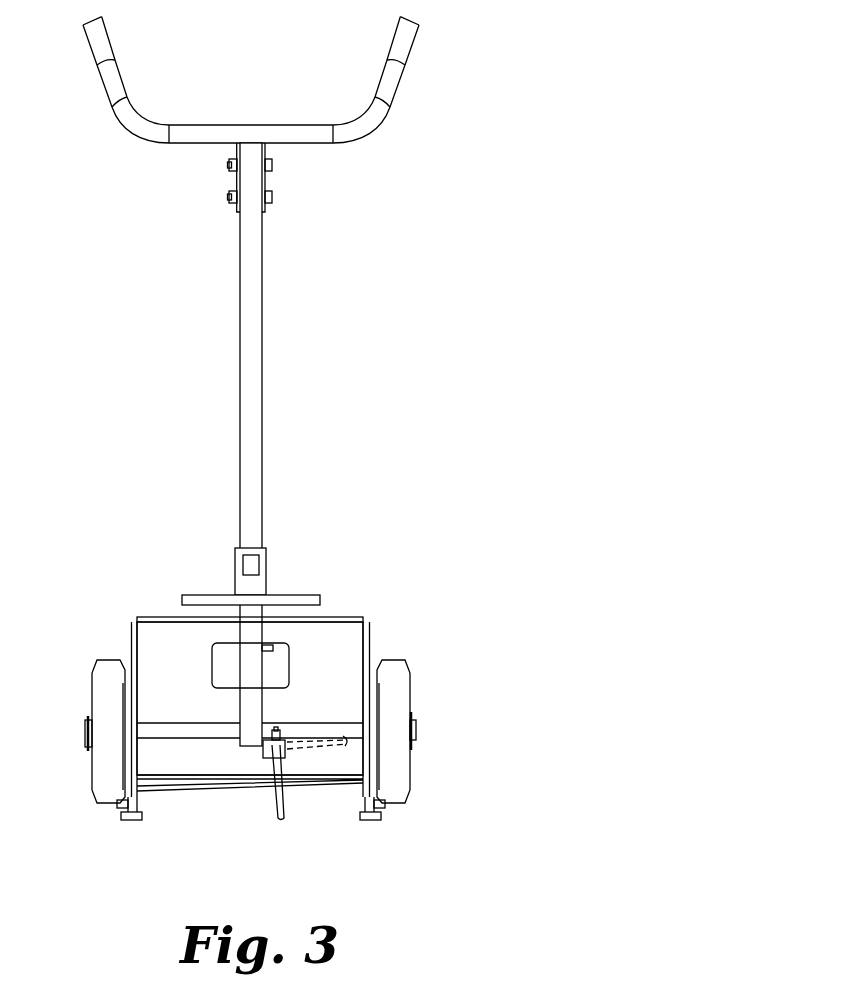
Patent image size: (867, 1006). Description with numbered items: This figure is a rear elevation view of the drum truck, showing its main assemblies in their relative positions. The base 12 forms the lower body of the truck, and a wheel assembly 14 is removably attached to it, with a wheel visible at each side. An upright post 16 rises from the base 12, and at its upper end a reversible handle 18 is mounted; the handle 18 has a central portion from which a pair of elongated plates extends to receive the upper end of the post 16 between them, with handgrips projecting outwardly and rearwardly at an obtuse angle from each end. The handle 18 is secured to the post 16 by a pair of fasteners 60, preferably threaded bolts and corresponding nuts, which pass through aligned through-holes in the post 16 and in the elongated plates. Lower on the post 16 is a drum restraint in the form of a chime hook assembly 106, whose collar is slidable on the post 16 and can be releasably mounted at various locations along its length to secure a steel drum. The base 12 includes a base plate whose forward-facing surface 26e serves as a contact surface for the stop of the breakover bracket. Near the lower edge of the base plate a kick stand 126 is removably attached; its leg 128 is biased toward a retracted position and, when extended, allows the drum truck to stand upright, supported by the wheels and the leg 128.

The base 12 is at (253, 677).
The wheel assembly 14 is at (434, 757).
The post 16 is at (262, 347).
The reversible handle 18 is at (430, 74).
The fasteners 60 is at (308, 185).
The chime hook assembly 106 is at (338, 580).
The forward-facing surface of the base plate 26e is at (332, 650).
The kick stand 126 is at (263, 767).
The leg 128 is at (287, 797).